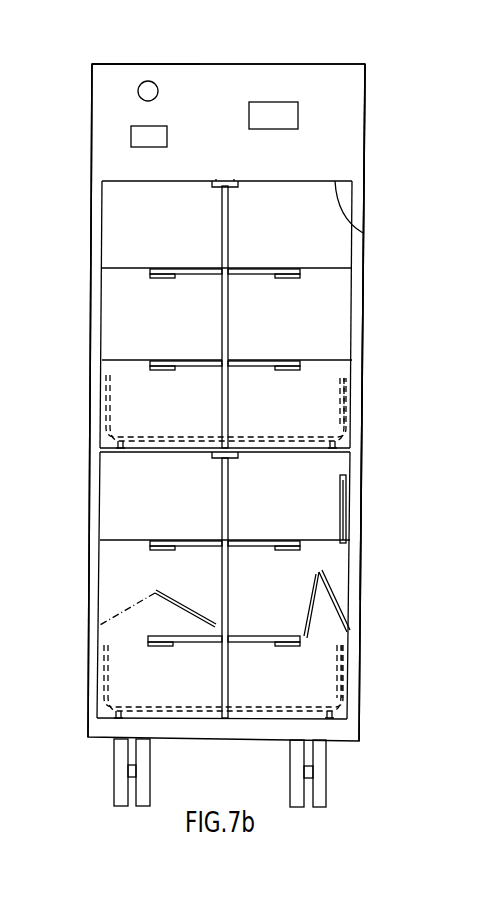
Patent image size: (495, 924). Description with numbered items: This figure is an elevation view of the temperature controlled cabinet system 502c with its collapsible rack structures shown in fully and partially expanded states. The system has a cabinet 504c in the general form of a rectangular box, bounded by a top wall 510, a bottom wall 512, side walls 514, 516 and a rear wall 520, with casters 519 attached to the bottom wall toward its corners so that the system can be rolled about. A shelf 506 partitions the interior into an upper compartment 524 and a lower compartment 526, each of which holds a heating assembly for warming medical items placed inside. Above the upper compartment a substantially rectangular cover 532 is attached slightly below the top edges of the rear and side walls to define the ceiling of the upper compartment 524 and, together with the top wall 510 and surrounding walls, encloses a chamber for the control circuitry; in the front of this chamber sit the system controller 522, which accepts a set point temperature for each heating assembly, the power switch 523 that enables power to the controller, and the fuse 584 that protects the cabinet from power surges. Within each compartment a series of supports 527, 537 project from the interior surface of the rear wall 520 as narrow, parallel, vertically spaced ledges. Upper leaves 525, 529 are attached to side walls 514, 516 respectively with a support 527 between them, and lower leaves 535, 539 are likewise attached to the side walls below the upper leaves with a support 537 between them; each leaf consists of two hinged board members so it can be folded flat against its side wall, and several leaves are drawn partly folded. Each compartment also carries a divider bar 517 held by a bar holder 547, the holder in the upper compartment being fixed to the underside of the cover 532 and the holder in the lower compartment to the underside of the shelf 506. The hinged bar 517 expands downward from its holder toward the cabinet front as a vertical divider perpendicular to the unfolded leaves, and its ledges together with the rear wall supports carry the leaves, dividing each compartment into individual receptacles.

The temperature controlled cabinet system 502c is at (66, 86).
The cabinet 504c is at (372, 63).
The shelf 506 is at (106, 432).
The top wall 510 is at (128, 63).
The bottom wall 512 is at (108, 698).
The side wall 514 is at (363, 350).
The side wall 516 is at (90, 304).
The divider bar 517 is at (229, 388).
The casters 519 is at (327, 790).
The rear wall 520 is at (363, 206).
The system controller 522 is at (298, 122).
The power switch 523 is at (150, 147).
The upper compartment 524 is at (112, 222).
The upper leaf 525 is at (260, 268).
The lower compartment 526 is at (112, 495).
The support 527 is at (250, 278).
The upper leaf 529 is at (135, 268).
The cover 532 is at (363, 233).
The lower leaf 535 is at (258, 360).
The support 537 is at (262, 372).
The lower leaf 539 is at (156, 360).
The bar holder 547 is at (229, 188).
The fuse 584 is at (158, 89).